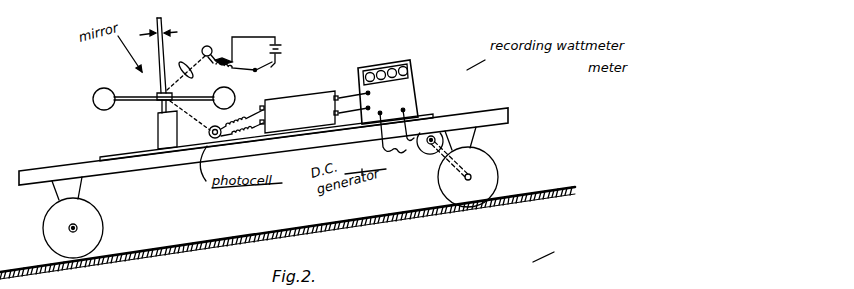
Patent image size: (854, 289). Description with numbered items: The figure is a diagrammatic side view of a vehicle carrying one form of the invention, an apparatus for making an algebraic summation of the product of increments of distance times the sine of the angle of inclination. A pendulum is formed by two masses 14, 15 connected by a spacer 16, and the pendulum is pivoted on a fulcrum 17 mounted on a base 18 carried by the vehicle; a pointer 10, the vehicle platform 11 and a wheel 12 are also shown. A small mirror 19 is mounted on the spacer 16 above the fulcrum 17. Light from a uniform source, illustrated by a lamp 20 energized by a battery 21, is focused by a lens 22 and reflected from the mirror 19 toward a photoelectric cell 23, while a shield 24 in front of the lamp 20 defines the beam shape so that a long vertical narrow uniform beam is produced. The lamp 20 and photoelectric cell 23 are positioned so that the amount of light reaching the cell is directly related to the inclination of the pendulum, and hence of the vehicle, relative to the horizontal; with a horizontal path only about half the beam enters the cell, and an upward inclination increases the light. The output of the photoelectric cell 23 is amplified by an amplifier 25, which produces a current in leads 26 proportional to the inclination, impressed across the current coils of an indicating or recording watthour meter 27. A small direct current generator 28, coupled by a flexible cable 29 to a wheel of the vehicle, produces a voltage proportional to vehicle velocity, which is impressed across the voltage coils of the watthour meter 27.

The pointer needle 10 is at (158, 51).
The platform 11 is at (172, 160).
The wheels 12 is at (50, 272).
The mass 14 is at (107, 110).
The mass 15 is at (235, 96).
The spacer 16 is at (121, 82).
The fulcrum 17 is at (160, 137).
The base 18 is at (116, 148).
The mirror 19 is at (158, 93).
The lamp 20 is at (214, 51).
The battery 21 is at (283, 50).
The lens 22 is at (183, 61).
The photoelectric cell 23 is at (208, 134).
The shield 24 is at (208, 45).
The amplifier 25 is at (304, 90).
The leads 26 is at (350, 93).
The watthour meter 27 is at (417, 89).
The direct current generator 28 is at (423, 153).
The flexible cable 29 is at (437, 160).